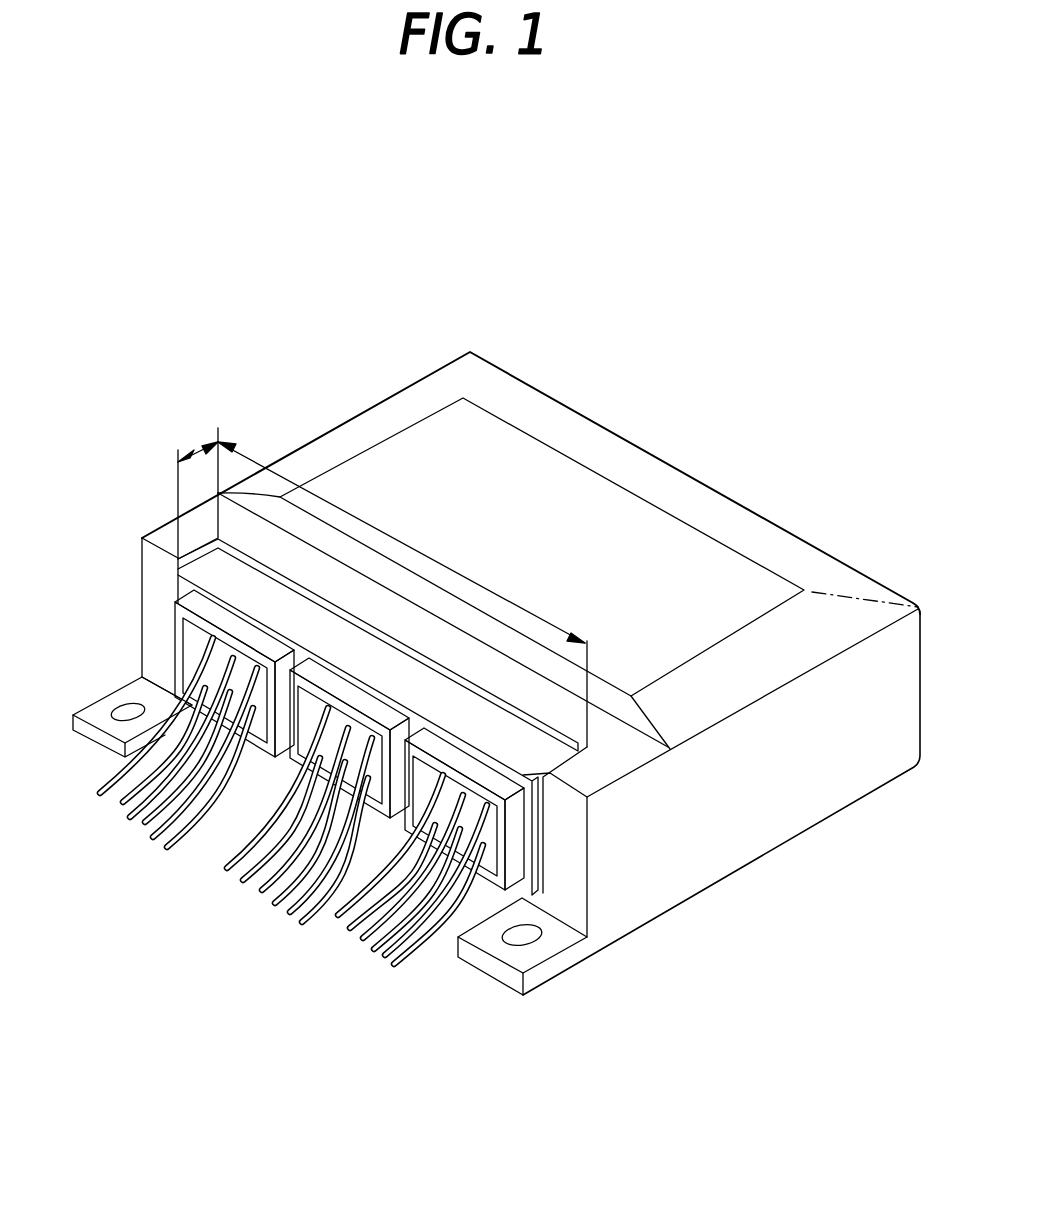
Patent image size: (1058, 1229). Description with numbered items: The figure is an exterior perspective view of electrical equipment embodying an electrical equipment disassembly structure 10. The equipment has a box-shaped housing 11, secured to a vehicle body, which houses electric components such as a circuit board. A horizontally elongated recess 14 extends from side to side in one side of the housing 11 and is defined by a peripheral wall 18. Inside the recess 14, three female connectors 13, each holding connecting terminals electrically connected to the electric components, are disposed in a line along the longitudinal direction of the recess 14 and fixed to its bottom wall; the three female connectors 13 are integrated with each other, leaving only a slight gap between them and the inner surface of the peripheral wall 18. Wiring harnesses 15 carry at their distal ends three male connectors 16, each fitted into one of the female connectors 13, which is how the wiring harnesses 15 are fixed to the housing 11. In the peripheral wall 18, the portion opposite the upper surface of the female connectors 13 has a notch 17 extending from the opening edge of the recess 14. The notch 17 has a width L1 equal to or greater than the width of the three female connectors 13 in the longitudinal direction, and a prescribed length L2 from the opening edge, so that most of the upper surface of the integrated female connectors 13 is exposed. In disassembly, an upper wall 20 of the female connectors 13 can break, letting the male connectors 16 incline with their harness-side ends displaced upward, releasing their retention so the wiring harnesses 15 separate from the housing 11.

The electrical equipment disassembly structure 10 is at (682, 343).
The housing 11 is at (405, 389).
The female connectors 13 is at (257, 635).
The recess 14 is at (534, 826).
The wiring harnesses 15 is at (178, 850).
The male connectors 16 is at (175, 625).
The notch 17 is at (450, 677).
The peripheral wall 18 is at (620, 757).
The upper wall 20 is at (316, 623).
The width of the notch L1 is at (420, 553).
The length of the notch L2 is at (196, 448).